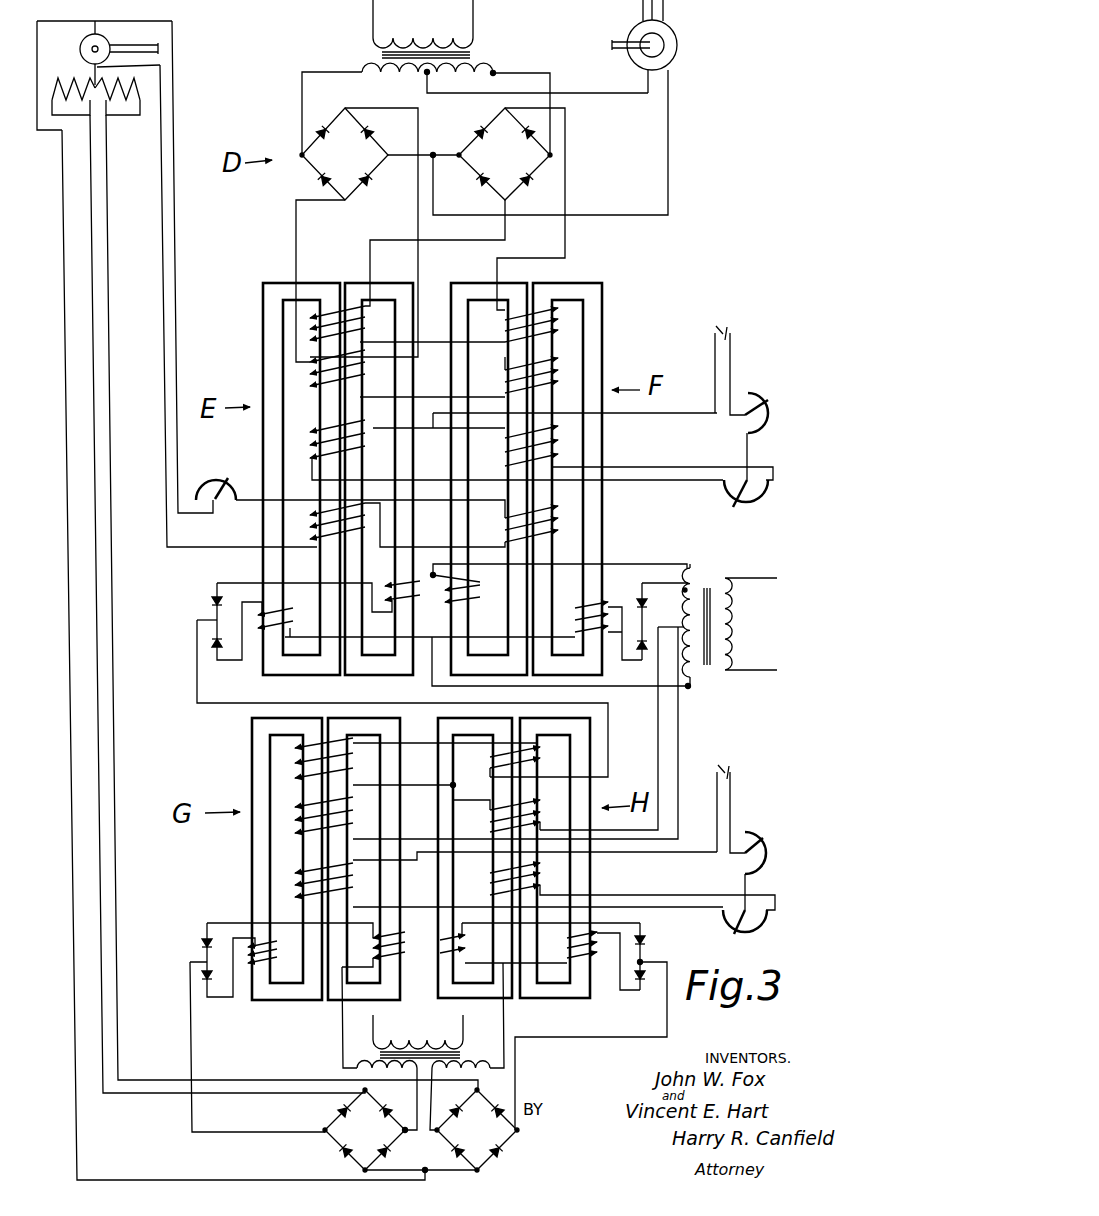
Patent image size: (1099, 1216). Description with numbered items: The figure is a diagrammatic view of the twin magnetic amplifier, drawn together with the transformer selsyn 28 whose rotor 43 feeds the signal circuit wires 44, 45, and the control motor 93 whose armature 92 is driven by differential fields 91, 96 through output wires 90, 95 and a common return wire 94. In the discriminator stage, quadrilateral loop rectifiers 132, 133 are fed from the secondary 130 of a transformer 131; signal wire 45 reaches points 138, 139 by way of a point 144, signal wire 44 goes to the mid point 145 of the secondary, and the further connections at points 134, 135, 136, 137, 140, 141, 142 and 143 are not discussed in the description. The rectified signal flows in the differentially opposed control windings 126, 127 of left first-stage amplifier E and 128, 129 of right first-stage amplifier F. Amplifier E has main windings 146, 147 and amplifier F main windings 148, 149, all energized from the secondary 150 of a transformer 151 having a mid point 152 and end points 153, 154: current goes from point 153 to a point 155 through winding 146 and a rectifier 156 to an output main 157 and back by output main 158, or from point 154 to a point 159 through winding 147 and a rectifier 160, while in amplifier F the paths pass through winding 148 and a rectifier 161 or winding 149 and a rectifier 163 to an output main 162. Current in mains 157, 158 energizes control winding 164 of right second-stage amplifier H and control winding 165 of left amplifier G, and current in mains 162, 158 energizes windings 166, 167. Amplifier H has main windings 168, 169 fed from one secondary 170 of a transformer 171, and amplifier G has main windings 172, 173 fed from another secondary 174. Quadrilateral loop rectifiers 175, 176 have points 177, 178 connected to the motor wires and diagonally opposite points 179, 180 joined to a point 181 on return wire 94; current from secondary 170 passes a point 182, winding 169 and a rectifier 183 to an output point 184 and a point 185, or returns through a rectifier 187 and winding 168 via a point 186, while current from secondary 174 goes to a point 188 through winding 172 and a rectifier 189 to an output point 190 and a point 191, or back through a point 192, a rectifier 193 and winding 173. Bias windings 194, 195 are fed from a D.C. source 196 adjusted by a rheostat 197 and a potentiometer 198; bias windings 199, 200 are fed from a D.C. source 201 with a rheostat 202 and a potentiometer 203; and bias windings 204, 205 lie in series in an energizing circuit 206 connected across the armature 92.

The transformer selsyn 28 is at (677, 40).
The rotor 43 is at (677, 56).
The signal circuit wire 44 is at (626, 96).
The signal circuit wire 45 is at (669, 97).
The wire 90 is at (262, 1080).
The field 91 is at (117, 96).
The armature 92 is at (106, 41).
The control motor 93 is at (80, 49).
The wire 94 is at (263, 1180).
The wire 95 is at (254, 1092).
The field 96 is at (73, 96).
The control winding 126 is at (366, 341).
The control winding 127 is at (366, 384).
The control winding 128 is at (500, 324).
The control winding 129 is at (500, 382).
The secondary 130 is at (490, 66).
The transformer 131 is at (473, 52).
The quadrilateral loop rectifier 132 is at (345, 154).
The quadrilateral loop rectifier 133 is at (504, 154).
The winding terminal 134 is at (494, 76).
The rectifier terminal 135 is at (555, 155).
The rectifier terminal 136 is at (503, 109).
The rectifier terminal 137 is at (505, 201).
The point 138 is at (459, 157).
The point 139 is at (388, 160).
The rectifier terminal 140 is at (344, 109).
The rectifier terminal 141 is at (348, 201).
The rectifier terminal 142 is at (300, 155).
The conductor 143 is at (364, 71).
The point 144 is at (434, 152).
The mid point 145 is at (425, 75).
The main winding 146 is at (398, 585).
The main winding 147 is at (281, 612).
The main winding 148 is at (471, 591).
The main winding 149 is at (578, 612).
The secondary 150 is at (682, 590).
The transformer 151 is at (712, 577).
The mid point 152 is at (682, 627).
The end point 153 is at (686, 563).
The end point 154 is at (690, 686).
The point 155 is at (433, 574).
The rectifier 156 is at (208, 604).
The output main 157 is at (196, 684).
The output main 158 is at (680, 713).
The point 159 is at (432, 637).
The rectifier 160 is at (208, 643).
The rectifier 161 is at (640, 603).
The output main 162 is at (658, 712).
The rectifier 163 is at (640, 656).
The control winding 164 is at (530, 764).
The control winding 165 is at (416, 774).
The winding 166 is at (530, 808).
The winding 167 is at (341, 817).
The main winding 168 is at (570, 950).
The main winding 169 is at (540, 938).
The secondary 170 is at (470, 1060).
The transformer 171 is at (418, 1050).
The main winding 172 is at (373, 948).
The main winding 173 is at (275, 943).
The secondary 174 is at (372, 1062).
The quadrilateral loop rectifier 175 is at (365, 1130).
The quadrilateral loop rectifier 176 is at (477, 1130).
The point 177 is at (385, 1089).
The point 178 is at (457, 1088).
The point 179 is at (363, 1170).
The point 180 is at (480, 1170).
The point 181 is at (428, 1165).
The point 182 is at (503, 963).
The rectifier 183 is at (650, 942).
The output point 184 is at (645, 962).
The point 185 is at (519, 1130).
The point 186 is at (441, 1116).
The rectifier 187 is at (645, 985).
The point 188 is at (340, 980).
The rectifier 189 is at (204, 945).
The output point 190 is at (190, 962).
The point 191 is at (324, 1130).
The point 192 is at (405, 1127).
The rectifier 193 is at (204, 978).
The bias winding 194 is at (312, 443).
The bias winding 195 is at (502, 447).
The D.C. source 196 is at (728, 359).
The rheostat 197 is at (750, 425).
The potentiometer 198 is at (748, 502).
The bias winding 199 is at (300, 873).
The bias winding 200 is at (490, 885).
The D.C. source 201 is at (726, 796).
The rheostat 202 is at (750, 838).
The potentiometer 203 is at (750, 926).
The bias winding 204 is at (312, 525).
The bias winding 205 is at (502, 529).
The energizing circuit 206 is at (170, 293).